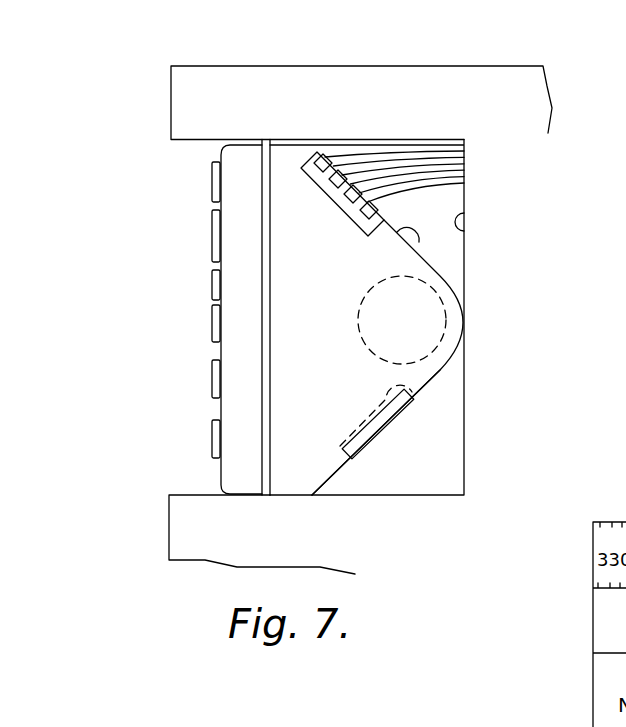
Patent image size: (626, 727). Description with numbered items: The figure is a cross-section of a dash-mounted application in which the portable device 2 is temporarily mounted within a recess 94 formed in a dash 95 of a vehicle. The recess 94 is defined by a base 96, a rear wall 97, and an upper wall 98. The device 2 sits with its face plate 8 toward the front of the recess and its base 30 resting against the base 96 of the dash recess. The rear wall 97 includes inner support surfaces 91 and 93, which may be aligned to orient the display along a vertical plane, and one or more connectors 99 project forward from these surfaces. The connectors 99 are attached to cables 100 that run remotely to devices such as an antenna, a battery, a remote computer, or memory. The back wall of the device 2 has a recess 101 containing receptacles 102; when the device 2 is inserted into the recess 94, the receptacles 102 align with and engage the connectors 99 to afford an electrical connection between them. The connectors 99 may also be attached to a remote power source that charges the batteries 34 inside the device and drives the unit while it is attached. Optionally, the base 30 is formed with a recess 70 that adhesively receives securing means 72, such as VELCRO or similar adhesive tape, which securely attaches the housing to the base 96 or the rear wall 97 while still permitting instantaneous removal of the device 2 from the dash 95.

The portable device 2 is at (178, 398).
The face plate 8 is at (220, 350).
The base 30 is at (266, 496).
The batteries 34 is at (422, 337).
The recess 70 is at (420, 393).
The securing means 72 is at (378, 437).
The inner support surface 91 is at (340, 468).
The inner support surface 93 is at (410, 243).
The recess 94 is at (183, 256).
The dash 95 is at (520, 285).
The base 96 is at (186, 494).
The rear wall 97 is at (466, 230).
The upper wall 98 is at (186, 103).
The connectors 99 is at (325, 157).
The cables 100 is at (507, 136).
The recess 101 is at (338, 205).
The receptacles 102 is at (356, 229).